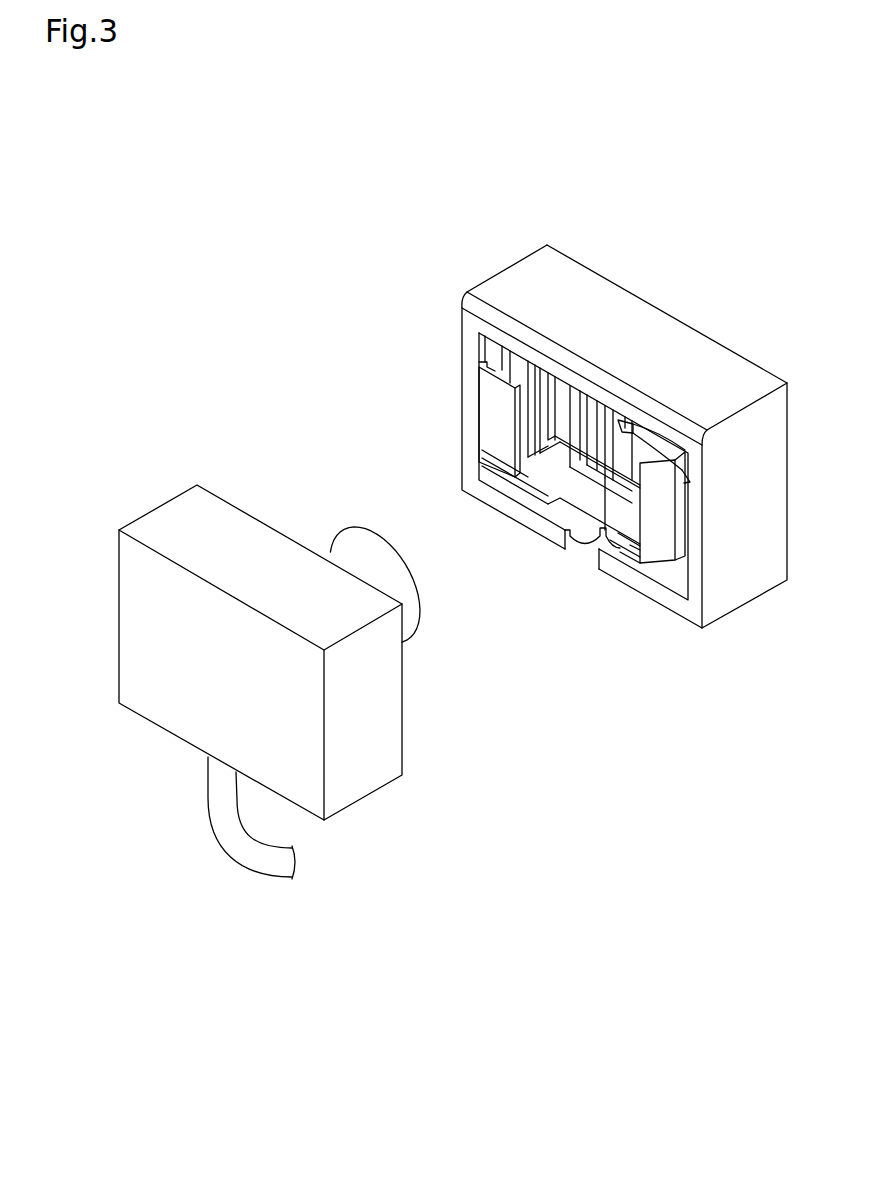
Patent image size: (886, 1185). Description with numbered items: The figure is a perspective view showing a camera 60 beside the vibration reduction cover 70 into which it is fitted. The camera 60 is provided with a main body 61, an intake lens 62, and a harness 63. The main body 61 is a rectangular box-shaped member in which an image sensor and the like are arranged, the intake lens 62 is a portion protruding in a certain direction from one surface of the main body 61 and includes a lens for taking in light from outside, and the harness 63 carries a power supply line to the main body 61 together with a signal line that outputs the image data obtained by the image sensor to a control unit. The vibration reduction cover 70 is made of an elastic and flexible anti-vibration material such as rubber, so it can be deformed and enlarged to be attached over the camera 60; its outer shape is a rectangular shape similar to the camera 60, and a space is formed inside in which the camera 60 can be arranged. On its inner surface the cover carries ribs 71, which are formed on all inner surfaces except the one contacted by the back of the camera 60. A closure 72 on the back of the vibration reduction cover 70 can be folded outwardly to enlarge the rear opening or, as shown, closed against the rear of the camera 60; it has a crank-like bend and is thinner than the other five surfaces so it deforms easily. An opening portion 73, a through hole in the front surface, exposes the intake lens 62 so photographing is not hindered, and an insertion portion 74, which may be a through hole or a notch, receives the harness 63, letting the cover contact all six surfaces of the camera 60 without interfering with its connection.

The camera 60 is at (80, 477).
The main body 61 is at (357, 783).
The intake lens 62 is at (334, 548).
The harness 63 is at (252, 857).
The vibration reduction cover 70 is at (427, 252).
The ribs 71 is at (527, 470).
The closure 72 is at (486, 416).
The opening portion 73 is at (647, 445).
The insertion portion 74 is at (587, 540).